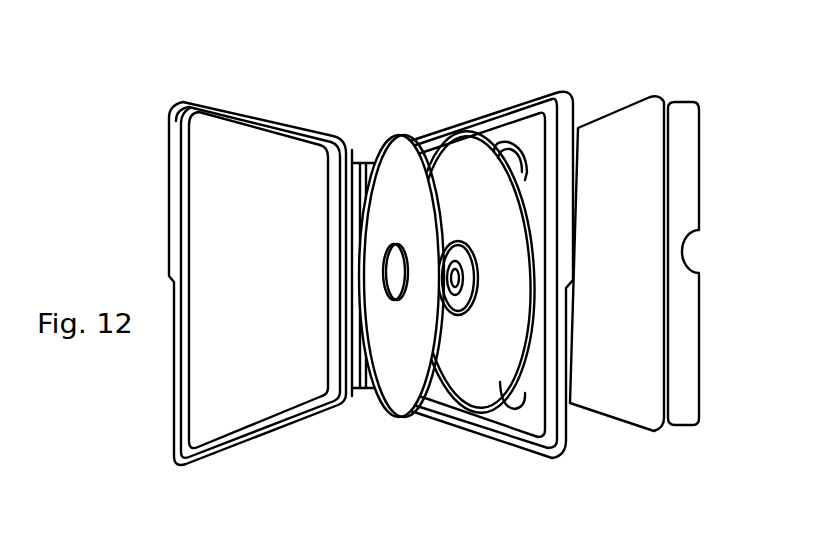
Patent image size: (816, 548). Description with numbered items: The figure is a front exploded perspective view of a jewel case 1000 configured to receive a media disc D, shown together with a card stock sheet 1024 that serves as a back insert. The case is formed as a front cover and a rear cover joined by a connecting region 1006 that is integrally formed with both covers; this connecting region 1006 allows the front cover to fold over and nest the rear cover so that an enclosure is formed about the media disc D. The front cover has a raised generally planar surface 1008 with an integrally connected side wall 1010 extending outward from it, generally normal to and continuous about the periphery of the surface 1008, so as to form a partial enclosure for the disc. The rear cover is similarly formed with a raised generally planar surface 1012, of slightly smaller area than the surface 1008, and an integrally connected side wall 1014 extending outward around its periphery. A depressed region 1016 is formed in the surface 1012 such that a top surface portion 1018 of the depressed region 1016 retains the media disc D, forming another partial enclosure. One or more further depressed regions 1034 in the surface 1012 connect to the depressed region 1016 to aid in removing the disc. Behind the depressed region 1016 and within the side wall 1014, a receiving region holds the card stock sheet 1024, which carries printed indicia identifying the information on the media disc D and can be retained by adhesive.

The jewel case 1000 is at (120, 87).
The connecting region 1006 is at (365, 163).
The raised generally planar surface 1008 is at (225, 403).
The side wall 1010 is at (173, 231).
The raised generally planar surface 1012 is at (520, 425).
The side wall 1014 is at (552, 423).
The depressed region 1016 is at (468, 417).
The top surface portion 1018 is at (470, 294).
The card stock sheet 1024 is at (684, 94).
The depressed regions 1034 is at (522, 180).
The media disc D is at (397, 373).